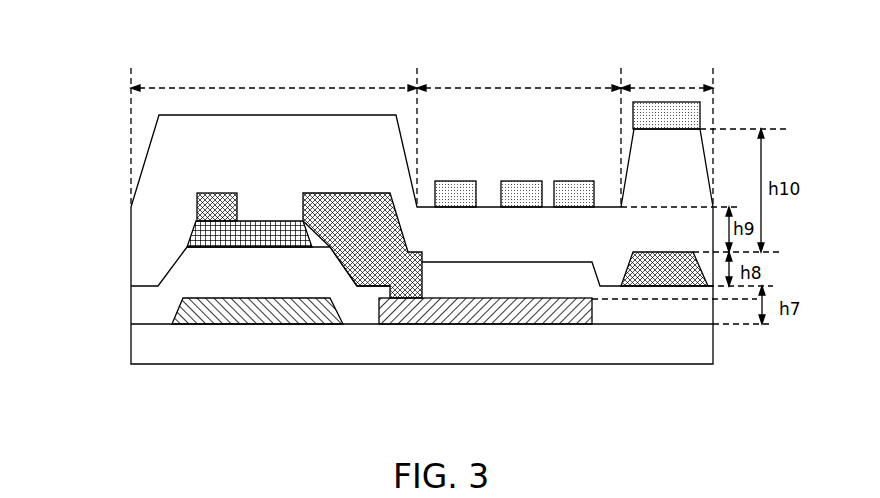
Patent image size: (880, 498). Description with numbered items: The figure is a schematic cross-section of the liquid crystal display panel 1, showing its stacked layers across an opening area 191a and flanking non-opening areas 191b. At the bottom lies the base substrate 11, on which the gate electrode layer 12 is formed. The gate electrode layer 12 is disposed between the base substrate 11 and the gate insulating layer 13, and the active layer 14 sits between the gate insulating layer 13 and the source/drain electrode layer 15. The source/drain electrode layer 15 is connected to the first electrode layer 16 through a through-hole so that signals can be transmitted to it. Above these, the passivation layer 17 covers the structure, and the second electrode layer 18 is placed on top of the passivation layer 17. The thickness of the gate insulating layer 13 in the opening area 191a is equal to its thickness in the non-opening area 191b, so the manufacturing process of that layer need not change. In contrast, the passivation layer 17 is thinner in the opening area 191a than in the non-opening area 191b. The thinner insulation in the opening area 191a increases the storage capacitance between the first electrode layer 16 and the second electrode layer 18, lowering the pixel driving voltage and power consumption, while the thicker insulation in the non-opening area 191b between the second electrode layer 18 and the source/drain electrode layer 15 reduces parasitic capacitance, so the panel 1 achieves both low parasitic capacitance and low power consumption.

The liquid crystal display panel 1 is at (125, 22).
The base substrate 11 is at (142, 348).
The gate electrode layer 12 is at (189, 310).
The gate insulating layer 13 is at (157, 302).
The active layer 14 is at (206, 230).
The source/drain electrode layer 15 is at (202, 205).
The first electrode layer 16 is at (475, 313).
The passivation layer 17 is at (167, 162).
The second electrode layer 18 is at (519, 200).
The opening area 191a is at (519, 134).
The non-opening area 191b is at (422, 134).